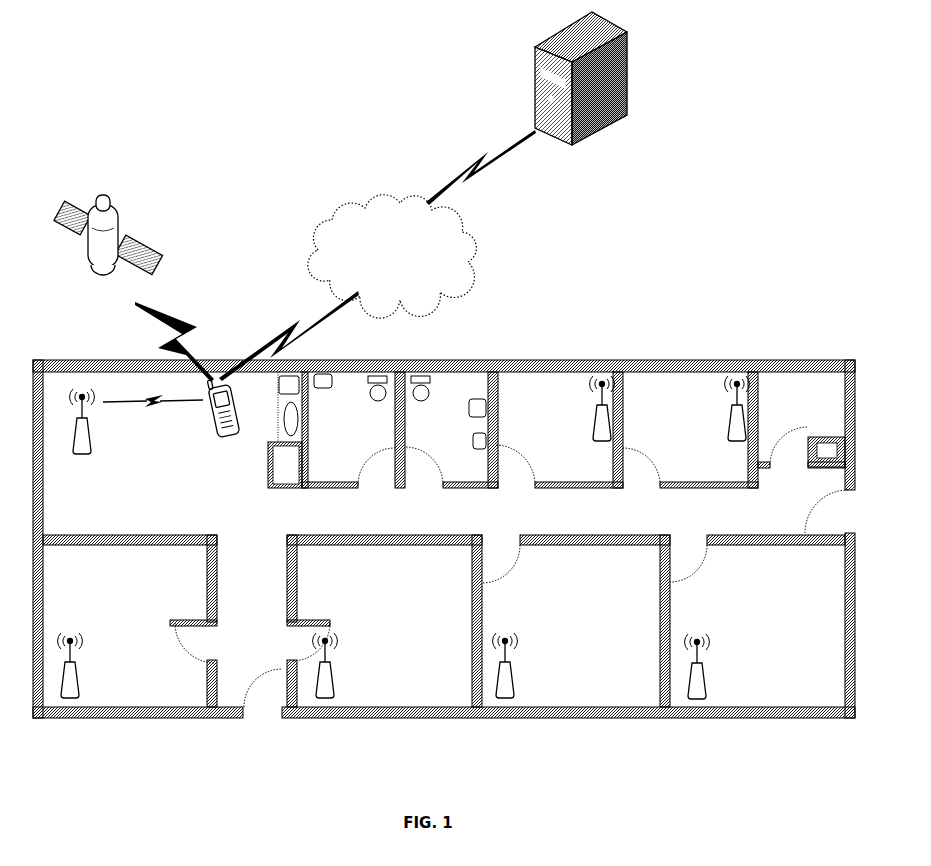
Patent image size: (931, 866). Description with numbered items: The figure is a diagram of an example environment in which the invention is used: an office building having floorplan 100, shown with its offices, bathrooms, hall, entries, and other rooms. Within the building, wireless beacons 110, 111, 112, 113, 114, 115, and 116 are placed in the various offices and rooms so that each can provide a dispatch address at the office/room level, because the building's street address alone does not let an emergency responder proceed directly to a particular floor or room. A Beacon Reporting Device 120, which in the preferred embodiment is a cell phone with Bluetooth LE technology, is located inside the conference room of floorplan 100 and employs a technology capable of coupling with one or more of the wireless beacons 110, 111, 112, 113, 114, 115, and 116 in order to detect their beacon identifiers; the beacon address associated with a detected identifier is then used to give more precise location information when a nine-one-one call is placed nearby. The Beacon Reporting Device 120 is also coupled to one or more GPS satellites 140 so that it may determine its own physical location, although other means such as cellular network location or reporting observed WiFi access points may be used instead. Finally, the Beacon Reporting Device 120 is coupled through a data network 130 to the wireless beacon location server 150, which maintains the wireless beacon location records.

The floorplan 100 is at (780, 360).
The wireless beacon 110 is at (73, 415).
The wireless beacon 111 is at (598, 405).
The wireless beacon 112 is at (735, 405).
The wireless beacon 113 is at (78, 668).
The wireless beacon 114 is at (332, 668).
The wireless beacon 115 is at (511, 668).
The wireless beacon 116 is at (704, 668).
The Beacon Reporting Device 120 is at (226, 365).
The data network 130 is at (474, 250).
The GPS satellite 140 is at (126, 224).
The wireless beacon location server 150 is at (535, 97).